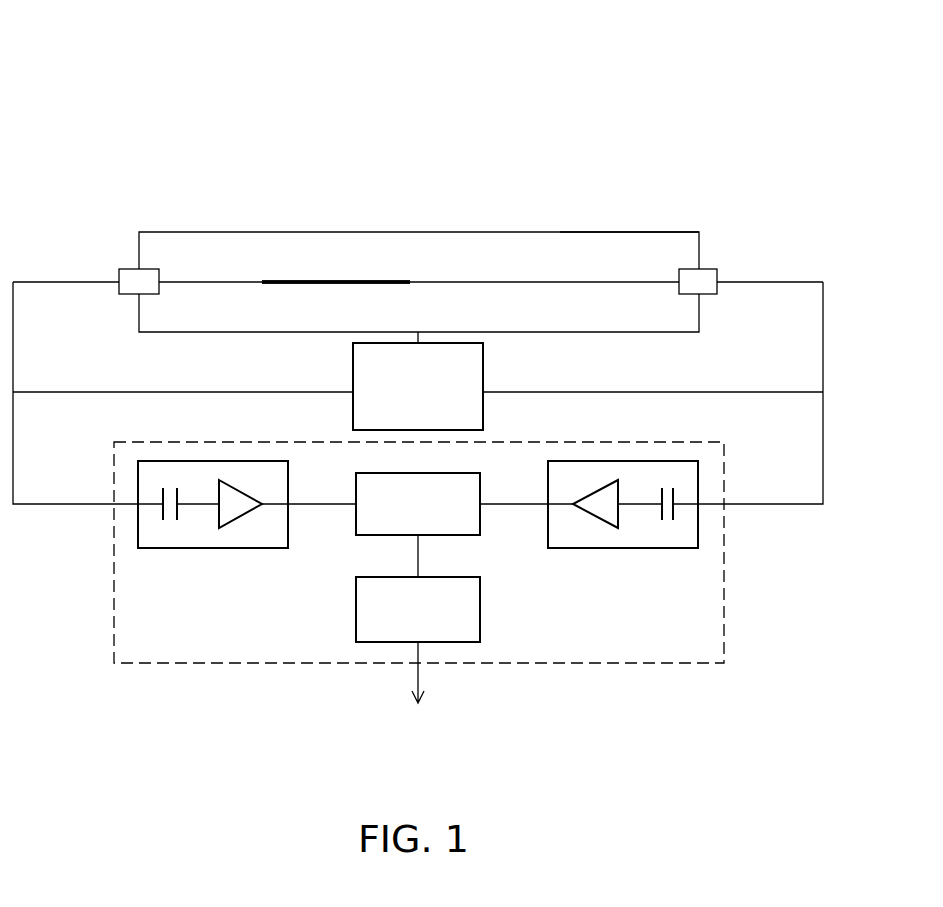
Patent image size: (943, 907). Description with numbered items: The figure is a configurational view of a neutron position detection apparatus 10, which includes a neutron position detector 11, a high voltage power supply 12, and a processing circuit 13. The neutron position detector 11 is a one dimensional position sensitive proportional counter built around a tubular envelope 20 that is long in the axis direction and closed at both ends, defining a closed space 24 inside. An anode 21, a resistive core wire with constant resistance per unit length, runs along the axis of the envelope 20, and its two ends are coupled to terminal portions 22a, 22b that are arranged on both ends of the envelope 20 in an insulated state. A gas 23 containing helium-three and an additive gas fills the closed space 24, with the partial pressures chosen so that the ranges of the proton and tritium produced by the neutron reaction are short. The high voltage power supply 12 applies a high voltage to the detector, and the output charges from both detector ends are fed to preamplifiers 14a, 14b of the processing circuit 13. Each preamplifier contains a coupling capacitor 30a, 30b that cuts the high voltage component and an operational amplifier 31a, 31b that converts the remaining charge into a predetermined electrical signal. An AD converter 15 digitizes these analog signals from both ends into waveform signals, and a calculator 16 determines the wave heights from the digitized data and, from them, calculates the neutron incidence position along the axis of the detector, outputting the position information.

The neutron position detection apparatus 10 is at (150, 63).
The neutron position detector 11 is at (269, 223).
The tubular envelope 20 is at (338, 232).
The anode 21 is at (418, 282).
The terminal portion 22a is at (130, 269).
The terminal portion 22b is at (706, 269).
The gas 23 is at (610, 245).
The closed space 24 is at (191, 245).
The high voltage power supply 12 is at (483, 372).
The processing circuit 13 is at (579, 664).
The preamplifier 14a is at (196, 461).
The preamplifier 14b is at (638, 461).
The coupling capacitor 30a is at (166, 522).
The coupling capacitor 30b is at (672, 522).
The operational amplifier 31a is at (240, 520).
The operational amplifier 31b is at (596, 520).
The AD converter 15 is at (480, 522).
The calculator 16 is at (480, 607).